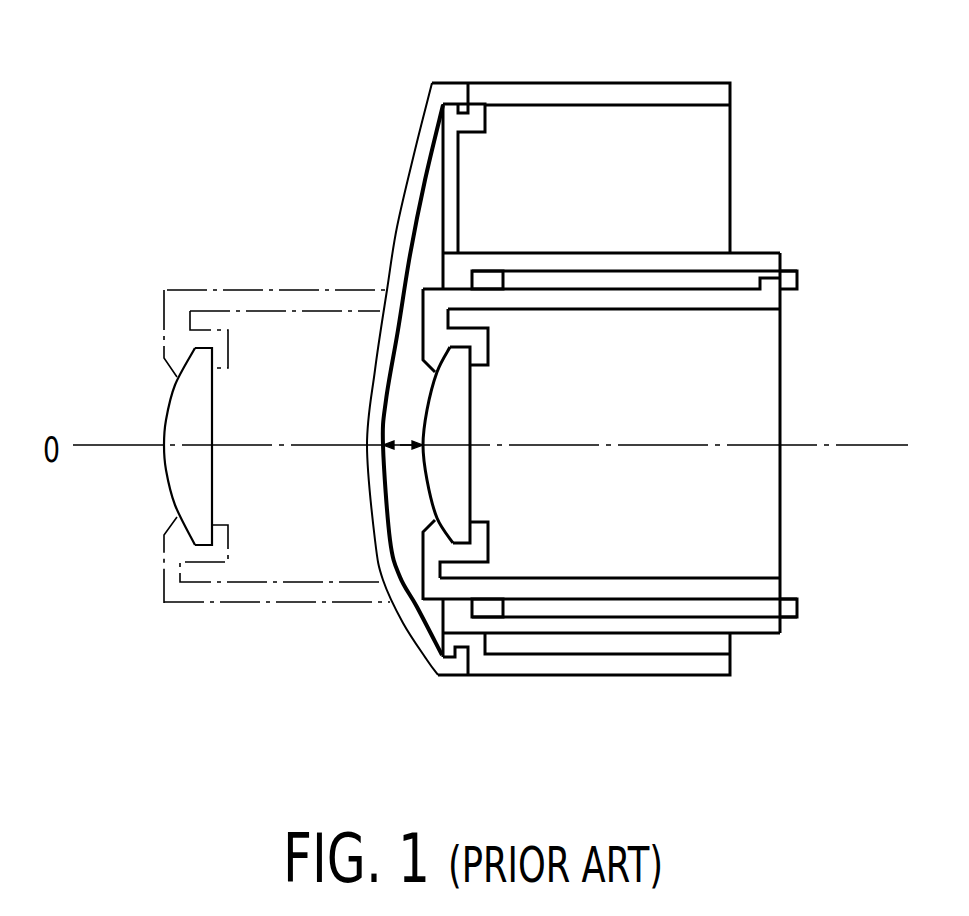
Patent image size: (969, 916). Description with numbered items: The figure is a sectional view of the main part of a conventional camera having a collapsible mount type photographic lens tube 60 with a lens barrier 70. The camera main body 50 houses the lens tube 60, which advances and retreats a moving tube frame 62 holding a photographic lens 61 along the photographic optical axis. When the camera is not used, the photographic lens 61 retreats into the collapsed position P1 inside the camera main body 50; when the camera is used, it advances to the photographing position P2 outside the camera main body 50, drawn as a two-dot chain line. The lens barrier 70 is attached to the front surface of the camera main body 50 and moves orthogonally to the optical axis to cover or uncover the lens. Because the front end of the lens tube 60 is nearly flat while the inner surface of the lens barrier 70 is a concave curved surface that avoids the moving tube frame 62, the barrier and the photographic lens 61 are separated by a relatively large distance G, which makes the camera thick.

The camera main body 50 is at (720, 93).
The collapsible mount type photographic lens tube 60 is at (760, 368).
The photographic lens 61 is at (463, 402).
The moving tube frame 62 is at (742, 578).
The lens barrier 70 is at (397, 227).
The distance G is at (403, 450).
The collapsed position P1 is at (423, 445).
The photographing position P2 is at (163, 290).